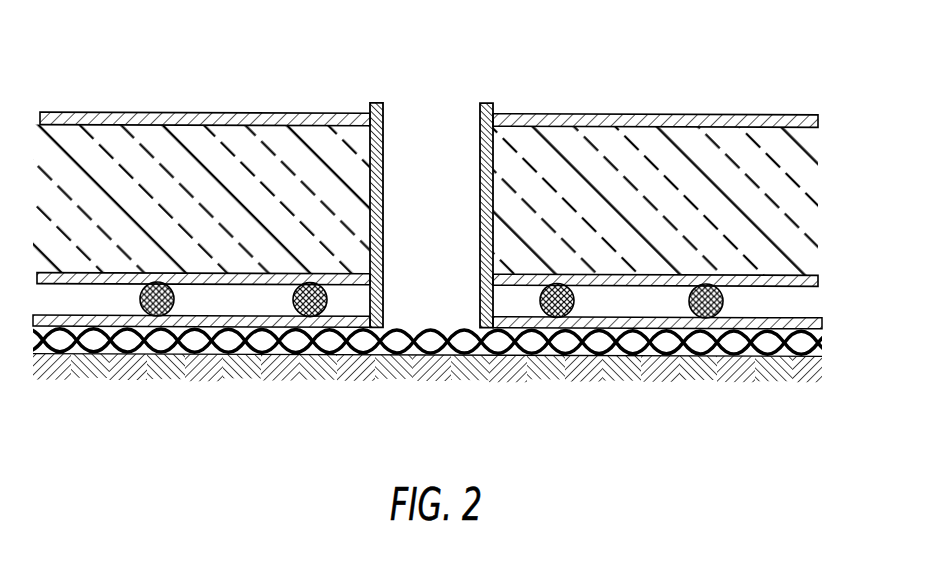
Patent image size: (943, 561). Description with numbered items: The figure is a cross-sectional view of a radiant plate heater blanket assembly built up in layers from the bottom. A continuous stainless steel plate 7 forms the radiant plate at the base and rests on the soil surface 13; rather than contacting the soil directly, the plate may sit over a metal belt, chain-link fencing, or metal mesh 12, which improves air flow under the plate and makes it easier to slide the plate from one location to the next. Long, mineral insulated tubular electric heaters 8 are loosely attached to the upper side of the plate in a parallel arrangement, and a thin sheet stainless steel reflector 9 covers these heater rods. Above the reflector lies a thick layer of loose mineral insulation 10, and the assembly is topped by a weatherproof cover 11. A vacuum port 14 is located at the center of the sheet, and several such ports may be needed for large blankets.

The continuous stainless steel plate 7 is at (817, 323).
The mineral insulated tubular electric heaters 8 is at (723, 296).
The thin sheet stainless steel reflector 9 is at (813, 280).
The loose mineral insulation 10 is at (592, 140).
The weatherproof cover 11 is at (657, 114).
The metal mesh 12 is at (435, 323).
The soil surface 13 is at (562, 355).
The vacuum port 14 is at (447, 236).